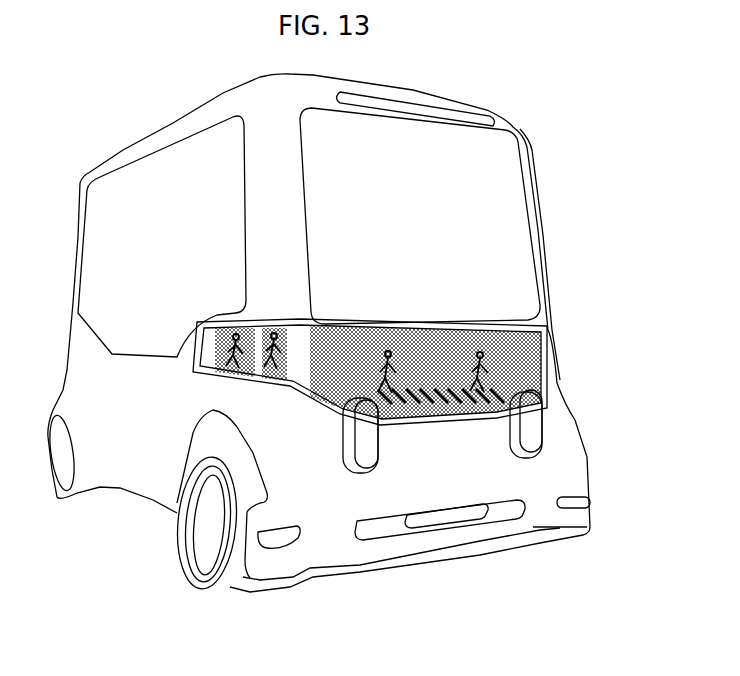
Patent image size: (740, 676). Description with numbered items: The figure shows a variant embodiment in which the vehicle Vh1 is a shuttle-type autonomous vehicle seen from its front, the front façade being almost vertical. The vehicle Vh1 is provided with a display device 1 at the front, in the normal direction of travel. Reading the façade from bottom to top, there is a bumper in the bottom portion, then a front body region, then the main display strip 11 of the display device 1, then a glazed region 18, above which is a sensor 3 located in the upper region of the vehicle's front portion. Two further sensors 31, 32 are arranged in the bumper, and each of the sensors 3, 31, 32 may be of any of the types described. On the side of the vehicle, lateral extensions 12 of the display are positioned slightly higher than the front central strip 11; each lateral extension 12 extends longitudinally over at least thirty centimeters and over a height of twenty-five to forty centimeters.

The vehicle Vh1 is at (548, 161).
The display device 1 is at (362, 459).
The sensor 3 is at (478, 113).
The main display strip 11 is at (557, 382).
The lateral extensions 12 is at (243, 382).
The glazed region 18 is at (512, 300).
The sensor 31 is at (273, 540).
The sensor 32 is at (447, 518).